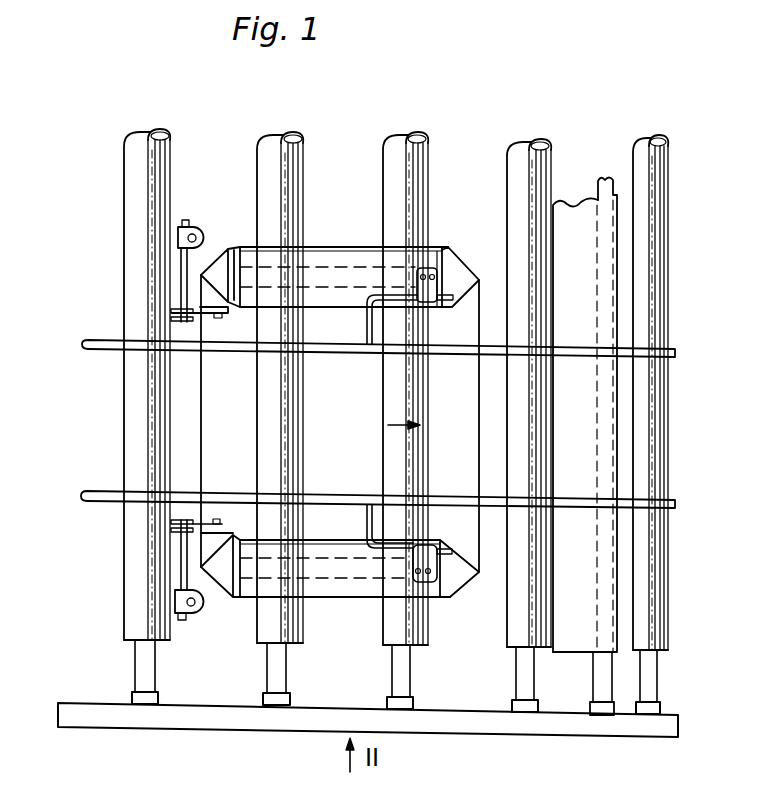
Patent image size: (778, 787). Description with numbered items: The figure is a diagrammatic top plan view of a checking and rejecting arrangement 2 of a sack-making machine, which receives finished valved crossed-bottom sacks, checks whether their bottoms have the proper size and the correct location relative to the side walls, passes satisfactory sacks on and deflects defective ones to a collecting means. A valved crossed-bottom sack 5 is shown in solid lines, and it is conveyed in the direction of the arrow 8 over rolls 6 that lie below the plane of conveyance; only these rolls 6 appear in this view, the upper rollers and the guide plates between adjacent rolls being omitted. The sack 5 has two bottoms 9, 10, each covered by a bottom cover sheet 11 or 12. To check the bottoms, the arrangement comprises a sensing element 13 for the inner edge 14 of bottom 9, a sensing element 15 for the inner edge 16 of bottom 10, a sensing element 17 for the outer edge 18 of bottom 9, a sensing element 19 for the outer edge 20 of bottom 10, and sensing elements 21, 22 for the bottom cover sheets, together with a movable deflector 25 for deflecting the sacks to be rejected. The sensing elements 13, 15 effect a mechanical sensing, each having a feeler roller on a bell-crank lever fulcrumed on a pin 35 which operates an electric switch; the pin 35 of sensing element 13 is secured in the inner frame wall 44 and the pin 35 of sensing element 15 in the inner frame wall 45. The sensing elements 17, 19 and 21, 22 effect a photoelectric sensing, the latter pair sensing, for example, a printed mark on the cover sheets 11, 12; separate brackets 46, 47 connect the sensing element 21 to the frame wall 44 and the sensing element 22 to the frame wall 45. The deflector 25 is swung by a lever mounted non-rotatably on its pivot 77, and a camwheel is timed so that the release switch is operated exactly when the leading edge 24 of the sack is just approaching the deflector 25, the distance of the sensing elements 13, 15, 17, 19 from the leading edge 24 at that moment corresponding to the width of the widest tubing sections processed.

The checking and rejecting arrangement 2 is at (118, 419).
The valved crossed-bottom sack 5 is at (326, 441).
The rolls 6 is at (267, 152).
The arrow 8 is at (393, 427).
The bottom 9 is at (230, 240).
The bottom 10 is at (452, 582).
The bottom cover sheet 11 is at (323, 276).
The bottom cover sheet 12 is at (340, 592).
The sensing element 13 is at (222, 320).
The inner edge 14 is at (303, 322).
The sensing element 15 is at (227, 526).
The inner edge 16 is at (288, 540).
The sensing element 17 is at (193, 225).
The outer edge 18 is at (348, 247).
The sensing element 19 is at (194, 616).
The outer edge 20 is at (368, 601).
The sensing element 21 is at (428, 270).
The sensing element 22 is at (431, 541).
The leading edge 24 is at (479, 396).
The deflector 25 is at (575, 216).
The pin 35 is at (188, 275).
The inner wall 44 is at (102, 345).
The inner wall 45 is at (87, 492).
The bracket 46 is at (369, 333).
The bracket 47 is at (367, 531).
The pivot 77 is at (602, 661).